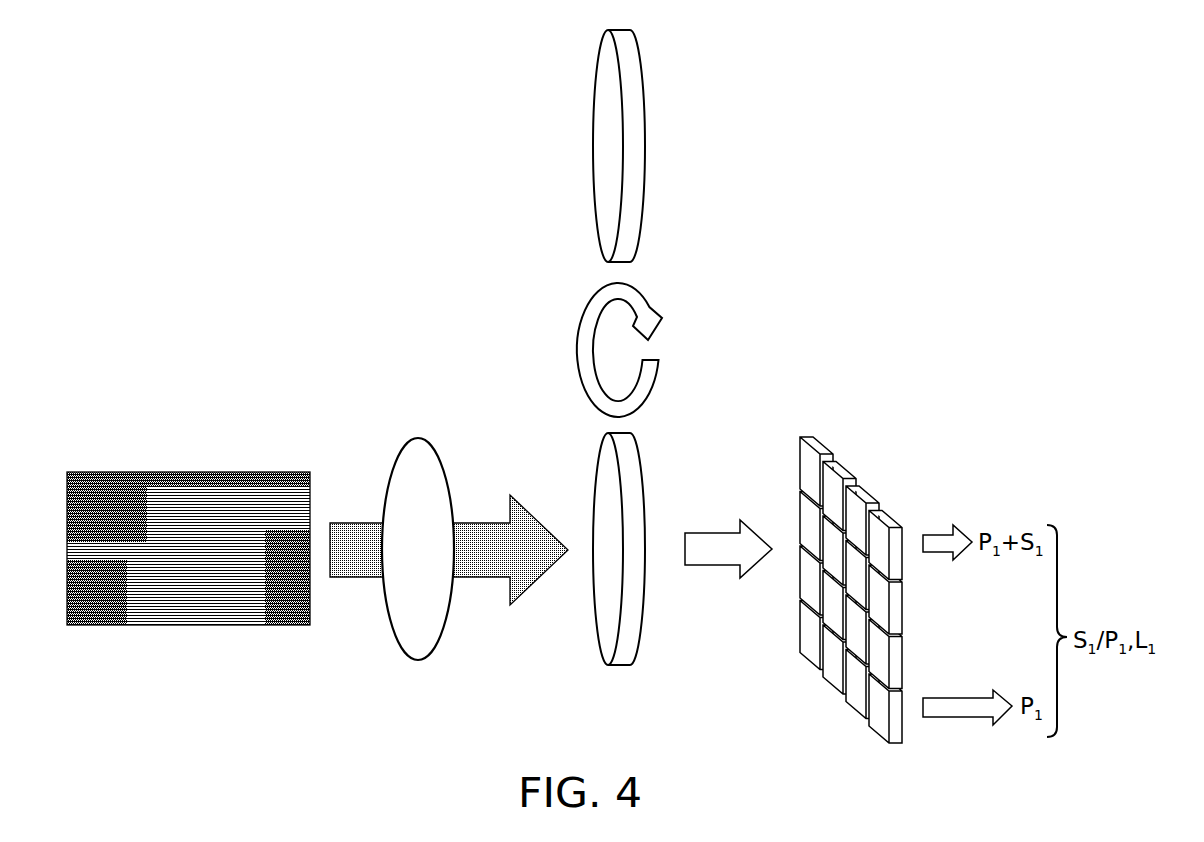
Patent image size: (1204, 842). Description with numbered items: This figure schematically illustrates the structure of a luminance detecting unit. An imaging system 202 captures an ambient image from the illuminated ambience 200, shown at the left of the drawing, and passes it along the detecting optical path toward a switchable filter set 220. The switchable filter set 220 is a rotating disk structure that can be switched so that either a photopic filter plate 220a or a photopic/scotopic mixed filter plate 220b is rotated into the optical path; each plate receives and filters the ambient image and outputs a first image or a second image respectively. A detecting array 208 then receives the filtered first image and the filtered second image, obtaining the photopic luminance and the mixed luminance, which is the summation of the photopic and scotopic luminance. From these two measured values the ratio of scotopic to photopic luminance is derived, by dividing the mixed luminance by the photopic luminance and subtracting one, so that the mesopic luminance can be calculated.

The illuminated ambience 200 is at (258, 488).
The imaging system 202 is at (438, 623).
The detecting array 208 is at (900, 722).
The switchable filter set 220 is at (688, 337).
The photopic filter plate 220a is at (630, 462).
The photopic/scotopic mixed filter plate 220b is at (630, 77).